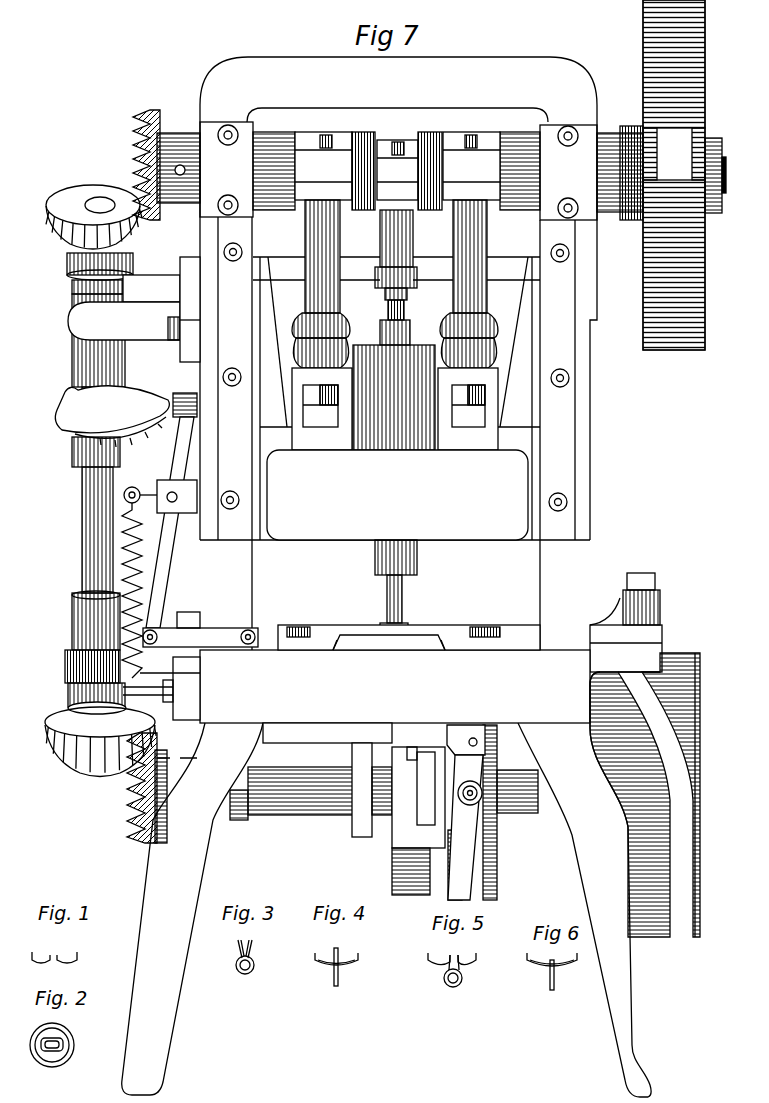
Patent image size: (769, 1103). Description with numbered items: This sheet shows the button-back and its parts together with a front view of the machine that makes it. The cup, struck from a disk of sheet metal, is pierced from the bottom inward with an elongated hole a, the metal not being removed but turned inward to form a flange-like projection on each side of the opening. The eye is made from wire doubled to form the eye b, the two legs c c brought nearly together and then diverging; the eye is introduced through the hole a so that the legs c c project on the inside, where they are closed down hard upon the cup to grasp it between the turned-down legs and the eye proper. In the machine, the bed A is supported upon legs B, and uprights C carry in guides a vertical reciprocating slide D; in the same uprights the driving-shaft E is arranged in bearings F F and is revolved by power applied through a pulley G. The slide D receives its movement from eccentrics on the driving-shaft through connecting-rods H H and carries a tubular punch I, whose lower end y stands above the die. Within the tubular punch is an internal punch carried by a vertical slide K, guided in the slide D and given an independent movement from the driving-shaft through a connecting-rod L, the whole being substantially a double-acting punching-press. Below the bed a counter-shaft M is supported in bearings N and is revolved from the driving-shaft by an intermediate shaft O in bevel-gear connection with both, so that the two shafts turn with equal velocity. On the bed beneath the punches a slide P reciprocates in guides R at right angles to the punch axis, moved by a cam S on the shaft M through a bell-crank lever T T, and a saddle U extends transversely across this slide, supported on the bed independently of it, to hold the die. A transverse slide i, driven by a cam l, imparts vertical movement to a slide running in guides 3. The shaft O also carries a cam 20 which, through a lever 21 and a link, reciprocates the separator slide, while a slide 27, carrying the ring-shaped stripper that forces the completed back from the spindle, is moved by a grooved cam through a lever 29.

In FIG. 7, the uprights C is at (431, 364).
In FIG. 7, the bearings F is at (398, 171).
In FIG. 7, the driving-shaft E is at (726, 172).
In FIG. 7, the pulley G is at (662, 175).
In FIG. 7, the intermediate shaft O is at (122, 476).
In FIG. 7, the cam 20 is at (112, 416).
In FIG. 7, the lever 21 is at (190, 535).
In FIG. 7, the connecting-rod L is at (397, 238).
In FIG. 7, the connecting-rods H is at (395, 284).
In FIG. 7, the vertical slide K is at (395, 385).
In FIG. 7, the vertical reciprocating slide D is at (397, 495).
In FIG. 7, the tubular punch I is at (396, 584).
In FIG. 7, the punch tip y is at (409, 620).
In FIG. 7, the bed A is at (356, 686).
In FIG. 7, the saddle U is at (409, 630).
In FIG. 7, the bell-crank lever T is at (498, 623).
In FIG. 7, the slide P is at (389, 642).
In FIG. 7, the guides R is at (446, 652).
In FIG. 7, the legs B is at (386, 884).
In FIG. 7, the bearings N is at (352, 802).
In FIG. 7, the counter-shaft M is at (320, 780).
In FIG. 7, the guides 3 is at (418, 797).
In FIG. 7, the transverse reciprocating slide i is at (426, 788).
In FIG. 7, the cam l is at (404, 871).
In FIG. 7, the slide 27 is at (472, 812).
In FIG. 7, the lever 29 is at (470, 784).
In FIG. 7, the cam S is at (645, 795).
In FIG. 1, the elongated hole a is at (54, 962).
In FIG. 2, the elongated hole a is at (32, 1052).
In FIG. 3, the eye b is at (240, 965).
In FIG. 4, the eye b is at (334, 975).
In FIG. 5, the eye b is at (452, 986).
In FIG. 6, the eye b is at (552, 975).
In FIG. 3, the legs c is at (245, 945).
In FIG. 4, the legs c is at (336, 951).
In FIG. 5, the legs c is at (452, 954).
In FIG. 6, the legs c is at (552, 959).